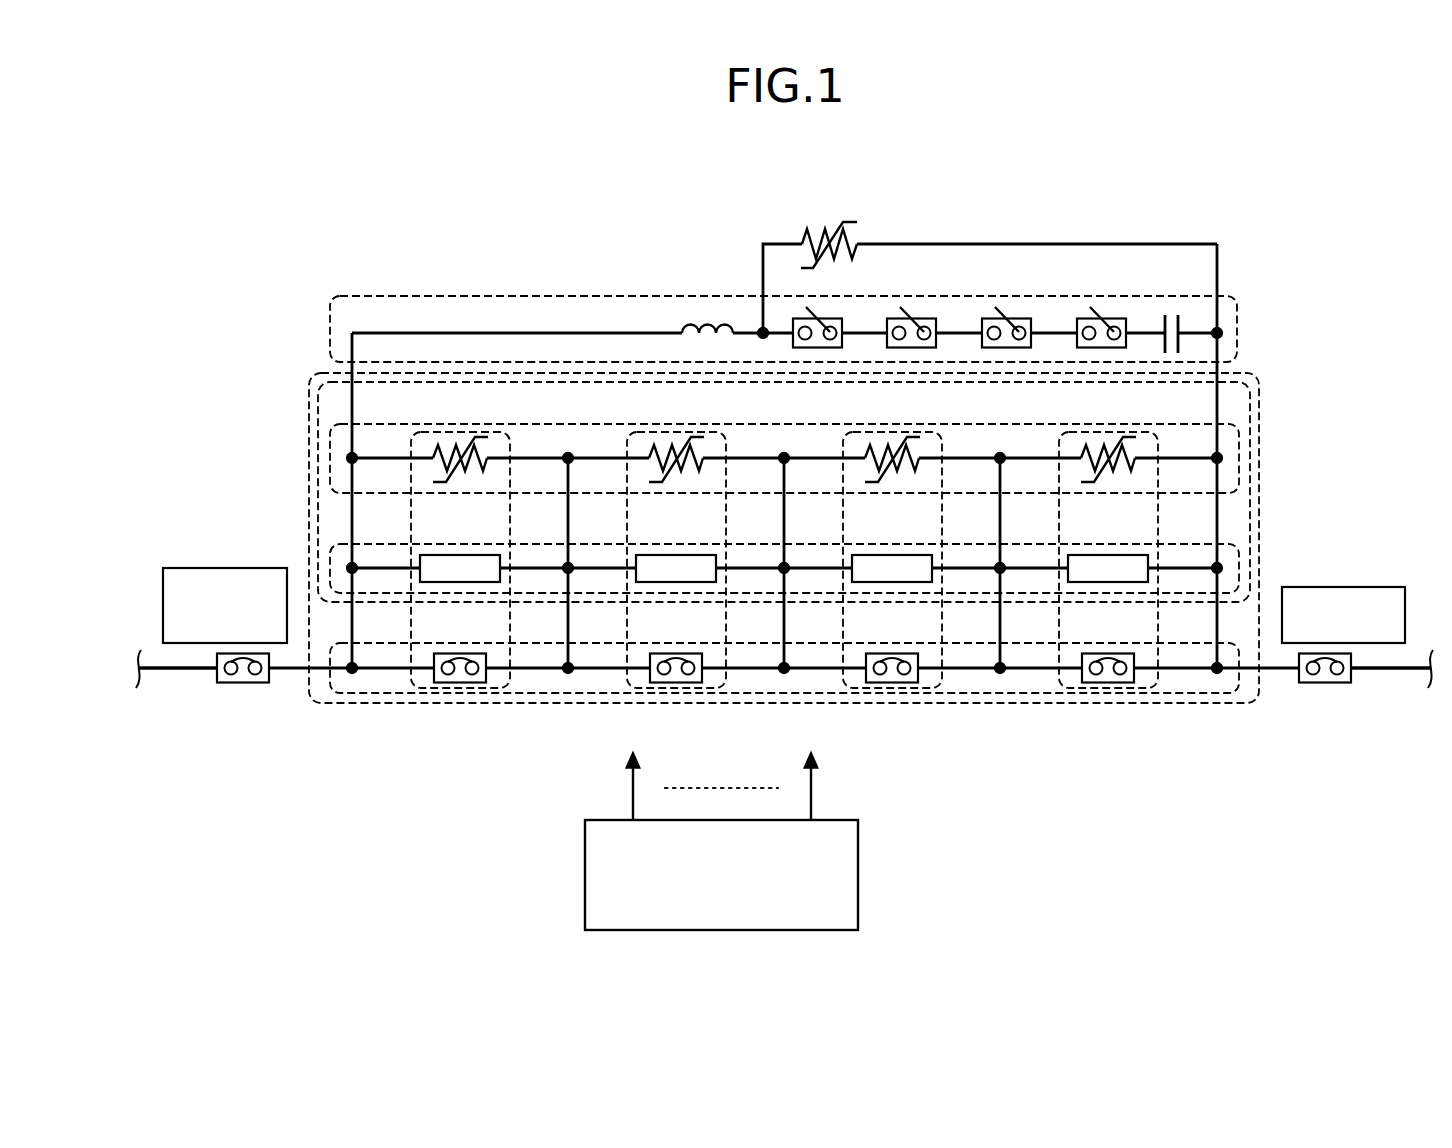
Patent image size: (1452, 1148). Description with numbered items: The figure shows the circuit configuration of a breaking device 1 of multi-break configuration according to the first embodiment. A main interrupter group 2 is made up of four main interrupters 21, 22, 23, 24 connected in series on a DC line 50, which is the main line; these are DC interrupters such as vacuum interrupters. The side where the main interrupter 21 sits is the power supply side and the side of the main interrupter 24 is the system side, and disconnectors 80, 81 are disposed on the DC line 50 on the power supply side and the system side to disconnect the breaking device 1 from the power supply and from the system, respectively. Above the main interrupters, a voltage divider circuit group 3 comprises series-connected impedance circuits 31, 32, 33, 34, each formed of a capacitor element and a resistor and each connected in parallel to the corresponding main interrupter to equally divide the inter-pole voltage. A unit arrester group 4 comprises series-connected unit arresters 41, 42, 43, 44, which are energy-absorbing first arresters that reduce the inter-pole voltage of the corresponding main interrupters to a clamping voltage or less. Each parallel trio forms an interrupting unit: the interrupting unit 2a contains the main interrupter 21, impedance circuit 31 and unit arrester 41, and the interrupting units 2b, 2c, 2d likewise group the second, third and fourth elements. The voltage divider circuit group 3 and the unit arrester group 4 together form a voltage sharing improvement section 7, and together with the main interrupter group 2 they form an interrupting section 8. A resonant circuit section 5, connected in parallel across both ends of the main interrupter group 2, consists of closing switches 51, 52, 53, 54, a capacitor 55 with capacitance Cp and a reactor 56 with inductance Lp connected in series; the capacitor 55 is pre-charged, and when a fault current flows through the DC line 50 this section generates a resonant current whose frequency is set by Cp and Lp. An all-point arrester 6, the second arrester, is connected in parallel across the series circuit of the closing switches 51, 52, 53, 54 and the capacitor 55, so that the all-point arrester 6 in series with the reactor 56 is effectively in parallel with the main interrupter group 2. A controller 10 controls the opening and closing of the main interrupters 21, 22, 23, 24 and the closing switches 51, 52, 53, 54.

The breaking device 1 is at (740, 190).
The main interrupter group 2 is at (1239, 690).
The interrupting unit 2a is at (410, 452).
The interrupting unit 2b is at (626, 452).
The interrupting unit 2c is at (842, 452).
The interrupting unit 2d is at (1058, 452).
The voltage divider circuit group 3 is at (1239, 565).
The unit arrester group 4 is at (1239, 455).
The resonant circuit section 5 is at (1237, 326).
The all-point arrester 6 is at (820, 230).
The voltage sharing improvement section 7 is at (1250, 418).
The interrupting section 8 is at (1259, 380).
The controller 10 is at (858, 872).
The main interrupter 21 is at (460, 654).
The main interrupter 22 is at (676, 654).
The main interrupter 23 is at (892, 654).
The main interrupter 24 is at (1108, 654).
The impedance circuit 31 is at (460, 555).
The impedance circuit 32 is at (676, 555).
The impedance circuit 33 is at (892, 555).
The impedance circuit 34 is at (1108, 555).
The unit arrester 41 is at (460, 445).
The unit arrester 42 is at (676, 445).
The unit arrester 43 is at (892, 445).
The unit arrester 44 is at (1108, 445).
The DC line 50 is at (190, 672).
The closing switch 51 is at (831, 320).
The closing switch 52 is at (925, 320).
The closing switch 53 is at (1019, 320).
The closing switch 54 is at (1114, 320).
The capacitor 55 is at (1170, 315).
The reactor 56 is at (706, 316).
The disconnector 80 is at (244, 683).
The disconnector 81 is at (1326, 683).